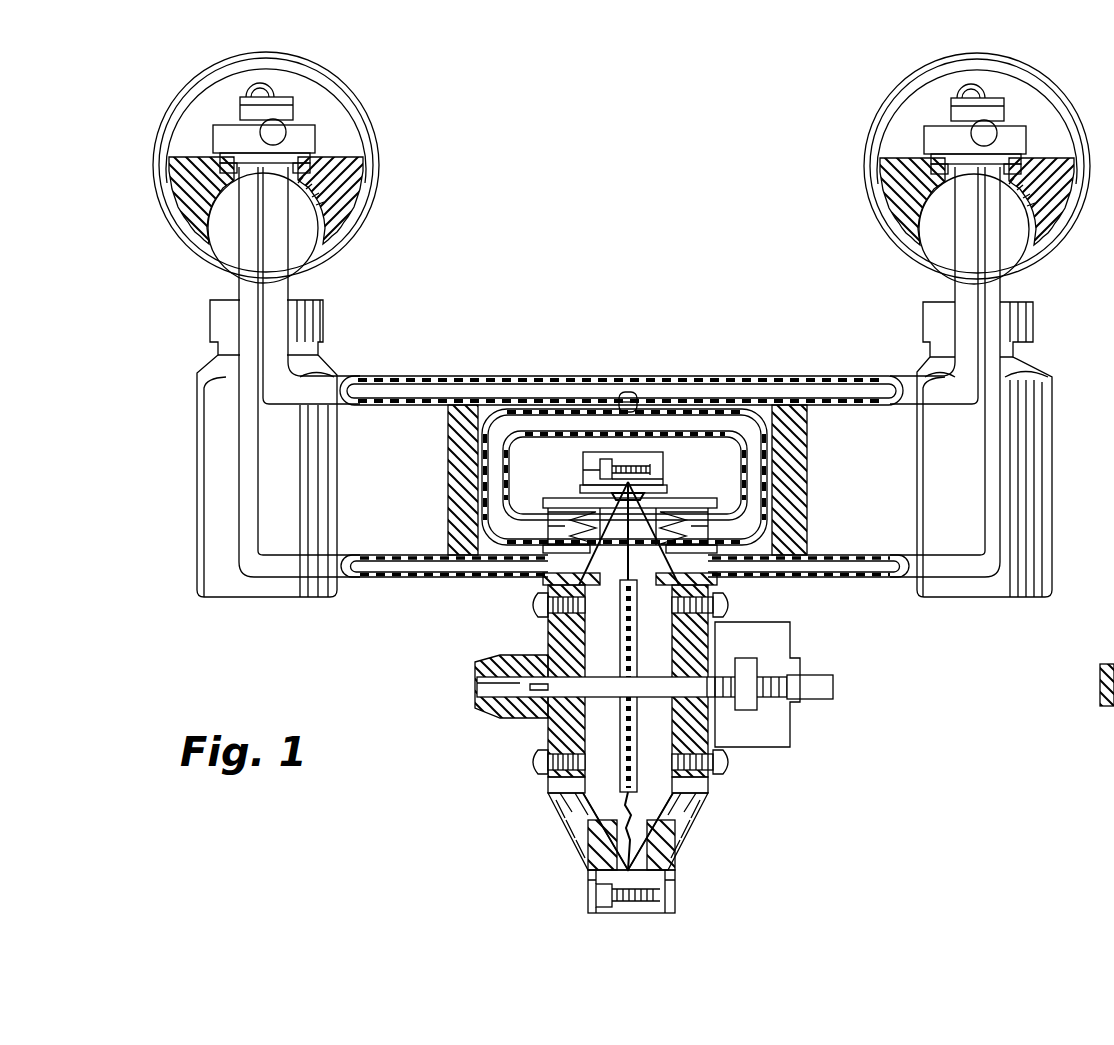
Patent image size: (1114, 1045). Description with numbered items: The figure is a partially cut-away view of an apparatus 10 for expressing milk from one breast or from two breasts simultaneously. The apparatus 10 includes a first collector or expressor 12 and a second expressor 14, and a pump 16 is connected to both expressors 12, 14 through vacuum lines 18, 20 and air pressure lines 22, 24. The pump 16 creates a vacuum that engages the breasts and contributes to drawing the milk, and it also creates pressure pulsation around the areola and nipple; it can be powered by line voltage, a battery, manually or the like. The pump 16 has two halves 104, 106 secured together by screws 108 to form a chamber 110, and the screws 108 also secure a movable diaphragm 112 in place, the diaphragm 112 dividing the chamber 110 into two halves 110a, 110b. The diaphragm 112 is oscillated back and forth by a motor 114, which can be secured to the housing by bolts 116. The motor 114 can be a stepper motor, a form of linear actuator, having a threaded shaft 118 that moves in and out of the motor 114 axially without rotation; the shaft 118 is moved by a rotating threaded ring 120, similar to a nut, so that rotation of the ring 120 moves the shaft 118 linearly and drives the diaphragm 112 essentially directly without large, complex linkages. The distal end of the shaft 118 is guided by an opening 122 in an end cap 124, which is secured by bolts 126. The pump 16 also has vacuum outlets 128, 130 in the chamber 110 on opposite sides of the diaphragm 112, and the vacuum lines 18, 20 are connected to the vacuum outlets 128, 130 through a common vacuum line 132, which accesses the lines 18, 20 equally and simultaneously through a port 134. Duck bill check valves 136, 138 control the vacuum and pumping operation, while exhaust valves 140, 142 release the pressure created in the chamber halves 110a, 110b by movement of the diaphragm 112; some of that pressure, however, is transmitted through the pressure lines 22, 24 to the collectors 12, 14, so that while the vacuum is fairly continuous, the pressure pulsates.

The apparatus 10 is at (160, 227).
The first expressor 12 is at (352, 258).
The second expressor 14 is at (882, 247).
The pump 16 is at (472, 725).
The vacuum line 18 is at (280, 287).
The vacuum line 20 is at (963, 287).
The air pressure line 22 is at (250, 285).
The air pressure line 24 is at (1000, 286).
The pump half 104 is at (572, 820).
The pump half 106 is at (687, 817).
The screws 108 is at (590, 465).
The chamber 110 is at (552, 789).
The chamber half 110a is at (600, 586).
The chamber half 110b is at (660, 585).
The diaphragm 112 is at (617, 635).
The motor 114 is at (782, 723).
The bolts 116 is at (724, 607).
The shaft 118 is at (817, 682).
The rotating threaded ring 120 is at (747, 692).
The opening 122 is at (507, 683).
The end cap 124 is at (540, 660).
The bolts 126 is at (530, 603).
The vacuum outlet 128 is at (498, 512).
The vacuum outlet 130 is at (708, 512).
The common vacuum line 132 is at (748, 410).
The port 134 is at (628, 392).
The duck bill valve 136 is at (572, 500).
The duck bill valve 138 is at (661, 510).
The exhaust valve 140 is at (588, 860).
The exhaust valve 142 is at (672, 857).